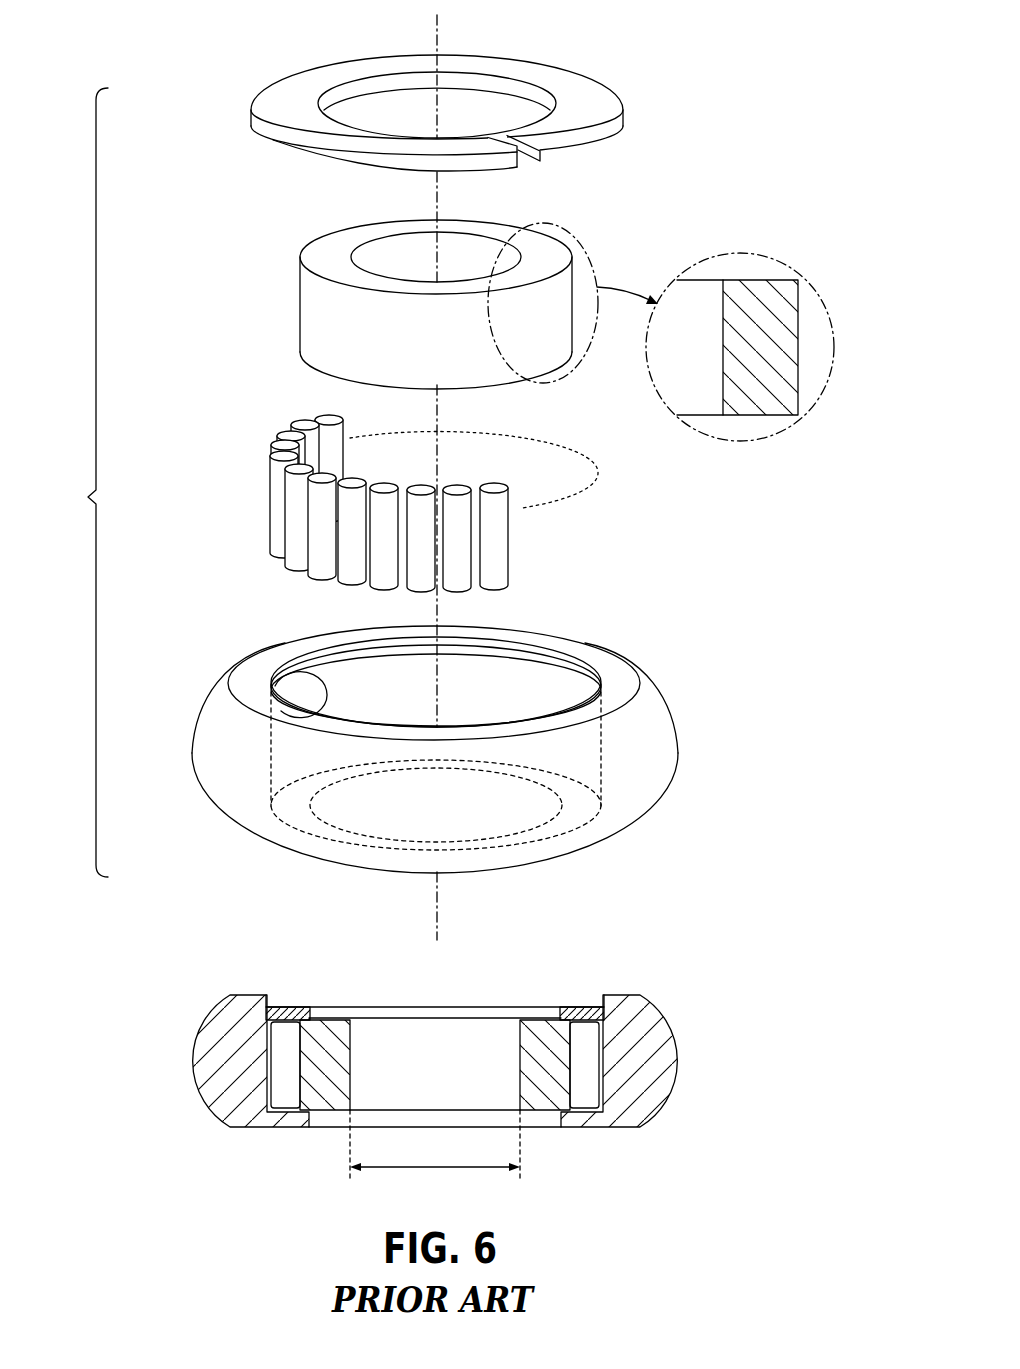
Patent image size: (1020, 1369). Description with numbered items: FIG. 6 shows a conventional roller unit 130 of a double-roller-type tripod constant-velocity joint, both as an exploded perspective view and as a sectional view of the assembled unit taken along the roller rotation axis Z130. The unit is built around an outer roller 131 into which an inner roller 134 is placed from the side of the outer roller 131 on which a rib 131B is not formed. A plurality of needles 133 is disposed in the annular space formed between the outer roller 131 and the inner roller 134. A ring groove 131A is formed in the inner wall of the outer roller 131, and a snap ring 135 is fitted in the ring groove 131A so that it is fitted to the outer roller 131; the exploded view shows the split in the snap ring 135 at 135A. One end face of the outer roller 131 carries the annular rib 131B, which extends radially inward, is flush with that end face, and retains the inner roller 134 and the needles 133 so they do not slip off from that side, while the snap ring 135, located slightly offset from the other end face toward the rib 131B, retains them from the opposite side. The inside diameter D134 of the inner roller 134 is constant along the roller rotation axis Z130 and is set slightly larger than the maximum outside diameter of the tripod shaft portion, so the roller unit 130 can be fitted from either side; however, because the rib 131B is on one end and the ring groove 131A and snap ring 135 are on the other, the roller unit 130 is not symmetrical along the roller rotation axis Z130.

The roller unit 130 is at (715, 967).
The roller rotation axis Z130 is at (449, 34).
The outer roller 131 is at (213, 668).
The ring groove 131A is at (281, 711).
The rib 131B is at (358, 801).
The needles 133 is at (262, 440).
The inner roller 134 is at (282, 268).
The snap ring 135 is at (238, 118).
The gap of split washer 135A is at (533, 170).
The inside diameter of the inner roller D134 is at (435, 1144).